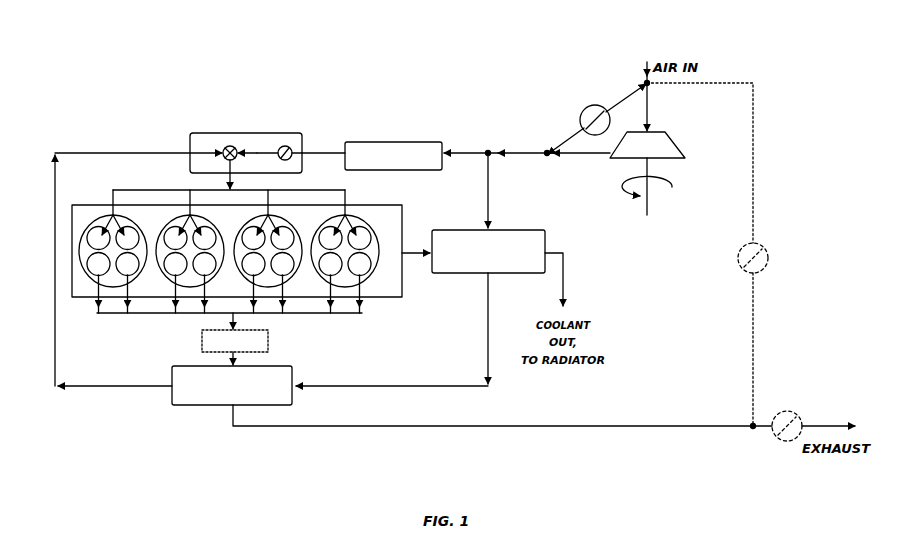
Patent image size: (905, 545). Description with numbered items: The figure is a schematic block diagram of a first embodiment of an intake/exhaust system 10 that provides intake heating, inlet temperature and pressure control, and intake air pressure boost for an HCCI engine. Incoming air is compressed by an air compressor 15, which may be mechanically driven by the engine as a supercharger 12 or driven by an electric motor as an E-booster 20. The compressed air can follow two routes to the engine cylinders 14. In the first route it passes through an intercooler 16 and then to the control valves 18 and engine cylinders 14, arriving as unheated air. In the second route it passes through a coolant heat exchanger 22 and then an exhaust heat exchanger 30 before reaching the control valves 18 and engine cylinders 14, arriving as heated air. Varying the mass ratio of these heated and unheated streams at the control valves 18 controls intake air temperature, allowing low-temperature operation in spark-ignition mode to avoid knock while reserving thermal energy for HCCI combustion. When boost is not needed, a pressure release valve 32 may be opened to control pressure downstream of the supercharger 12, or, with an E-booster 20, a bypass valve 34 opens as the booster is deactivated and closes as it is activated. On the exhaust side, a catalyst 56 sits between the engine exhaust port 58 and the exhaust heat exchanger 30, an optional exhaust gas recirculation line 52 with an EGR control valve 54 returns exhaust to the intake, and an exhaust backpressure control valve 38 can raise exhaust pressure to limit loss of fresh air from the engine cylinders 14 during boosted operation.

The intake/exhaust system 10 is at (790, 44).
The supercharger 12 is at (649, 196).
The engine cylinders 14 is at (87, 250).
The air compressor 15 is at (676, 160).
The intercooler 16 is at (404, 142).
The control valves 18 is at (247, 133).
The E-booster 20 is at (647, 186).
The coolant heat exchanger 22 is at (508, 230).
The exhaust heat exchanger 30 is at (190, 405).
The pressure release valve 32 is at (598, 105).
The bypass valve 34 is at (595, 120).
The exhaust backpressure control valve 38 is at (790, 412).
The exhaust gas recirculation line 52 is at (753, 202).
The EGR control valve 54 is at (768, 252).
The catalyst 56 is at (270, 352).
The engine exhaust port 58 is at (230, 316).